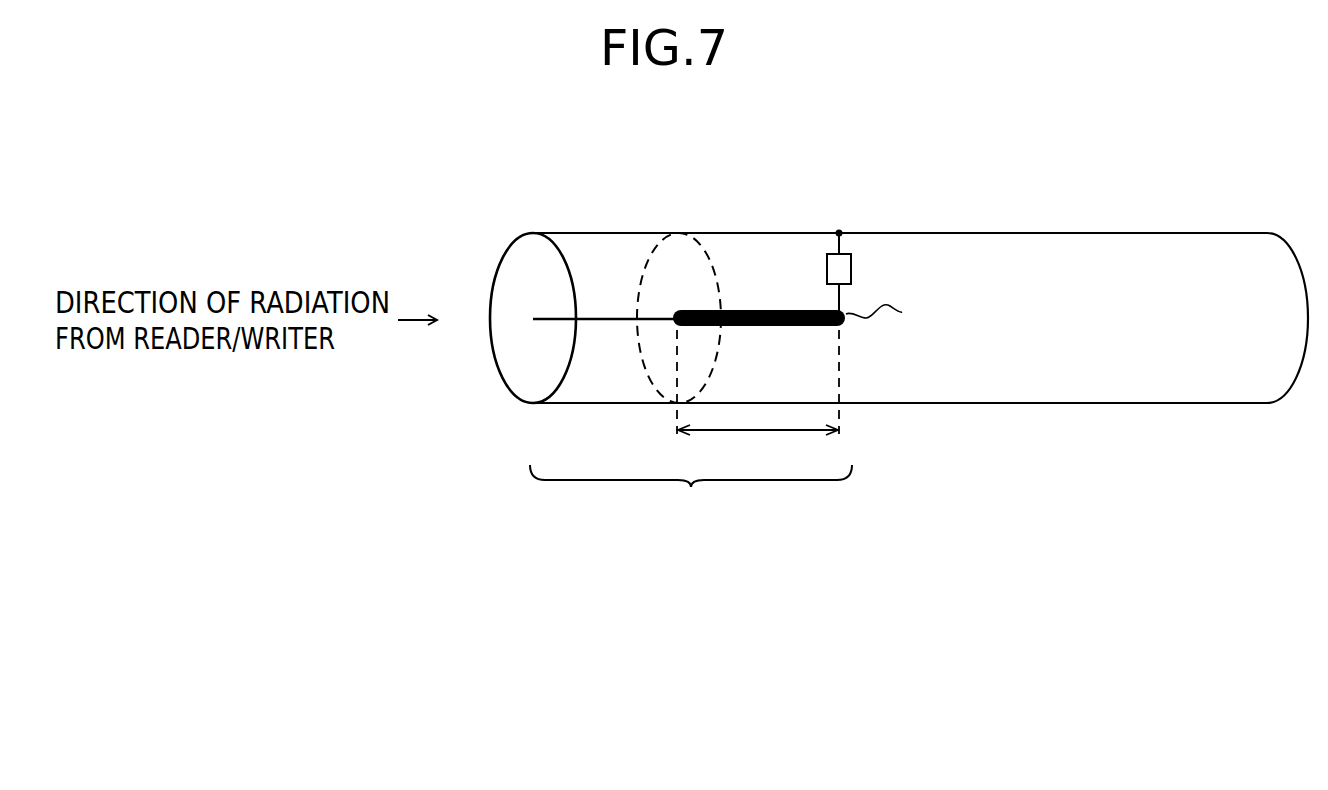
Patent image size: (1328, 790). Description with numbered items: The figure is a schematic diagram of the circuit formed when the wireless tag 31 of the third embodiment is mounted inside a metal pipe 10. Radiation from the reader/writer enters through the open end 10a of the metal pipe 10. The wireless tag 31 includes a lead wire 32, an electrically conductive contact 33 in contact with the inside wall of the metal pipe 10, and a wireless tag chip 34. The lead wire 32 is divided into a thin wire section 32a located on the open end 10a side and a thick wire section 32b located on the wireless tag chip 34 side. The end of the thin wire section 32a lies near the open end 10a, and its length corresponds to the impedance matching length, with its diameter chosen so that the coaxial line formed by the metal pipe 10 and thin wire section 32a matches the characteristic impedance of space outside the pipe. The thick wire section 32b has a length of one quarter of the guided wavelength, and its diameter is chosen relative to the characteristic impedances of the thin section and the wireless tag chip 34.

The metal pipe 10 is at (1205, 383).
The open end 10a is at (523, 260).
The wireless tag 31 is at (736, 332).
The lead wire 32 is at (894, 307).
The thin wire section 32a is at (608, 318).
The thick wire section 32b is at (768, 308).
The electrically conductive contact 33 is at (839, 233).
The wireless tag chip 34 is at (851, 265).